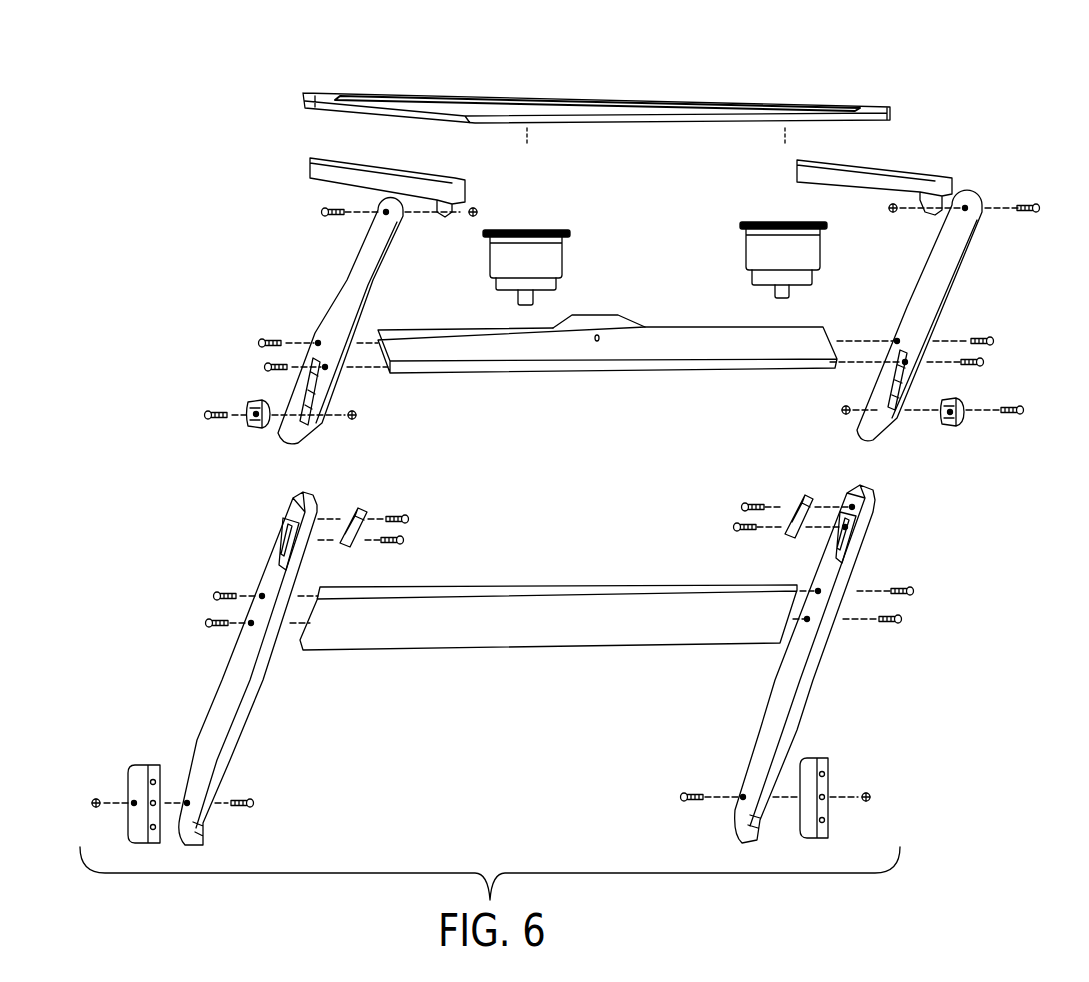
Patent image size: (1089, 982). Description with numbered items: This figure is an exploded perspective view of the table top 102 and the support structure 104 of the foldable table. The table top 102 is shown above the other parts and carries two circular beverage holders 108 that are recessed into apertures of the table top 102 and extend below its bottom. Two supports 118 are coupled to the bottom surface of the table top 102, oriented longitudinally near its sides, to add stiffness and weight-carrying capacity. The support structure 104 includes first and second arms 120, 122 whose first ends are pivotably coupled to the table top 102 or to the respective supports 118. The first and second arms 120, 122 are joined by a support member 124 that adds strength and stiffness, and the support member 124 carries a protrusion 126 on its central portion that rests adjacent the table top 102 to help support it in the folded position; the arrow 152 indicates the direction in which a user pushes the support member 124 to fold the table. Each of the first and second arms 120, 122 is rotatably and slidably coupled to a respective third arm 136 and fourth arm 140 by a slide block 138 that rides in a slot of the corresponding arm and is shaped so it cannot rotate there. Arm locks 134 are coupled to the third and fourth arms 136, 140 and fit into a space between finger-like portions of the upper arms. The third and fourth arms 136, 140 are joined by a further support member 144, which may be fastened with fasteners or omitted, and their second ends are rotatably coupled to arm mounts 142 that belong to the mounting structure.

The table top 102 is at (562, 100).
The support structure 104 is at (188, 495).
The beverage holder 108 is at (508, 263).
The support 118 is at (320, 170).
The first arm 120 is at (952, 273).
The second arm 122 is at (338, 322).
The support member 124 is at (680, 350).
The protrusion 126 is at (606, 315).
The arm lock 134 is at (362, 505).
The third arm 136 is at (808, 680).
The slide block 138 is at (262, 430).
The fourth arm 140 is at (222, 713).
The arm mount 142 is at (138, 792).
The support member 144 is at (542, 628).
The arrow 152 is at (597, 340).